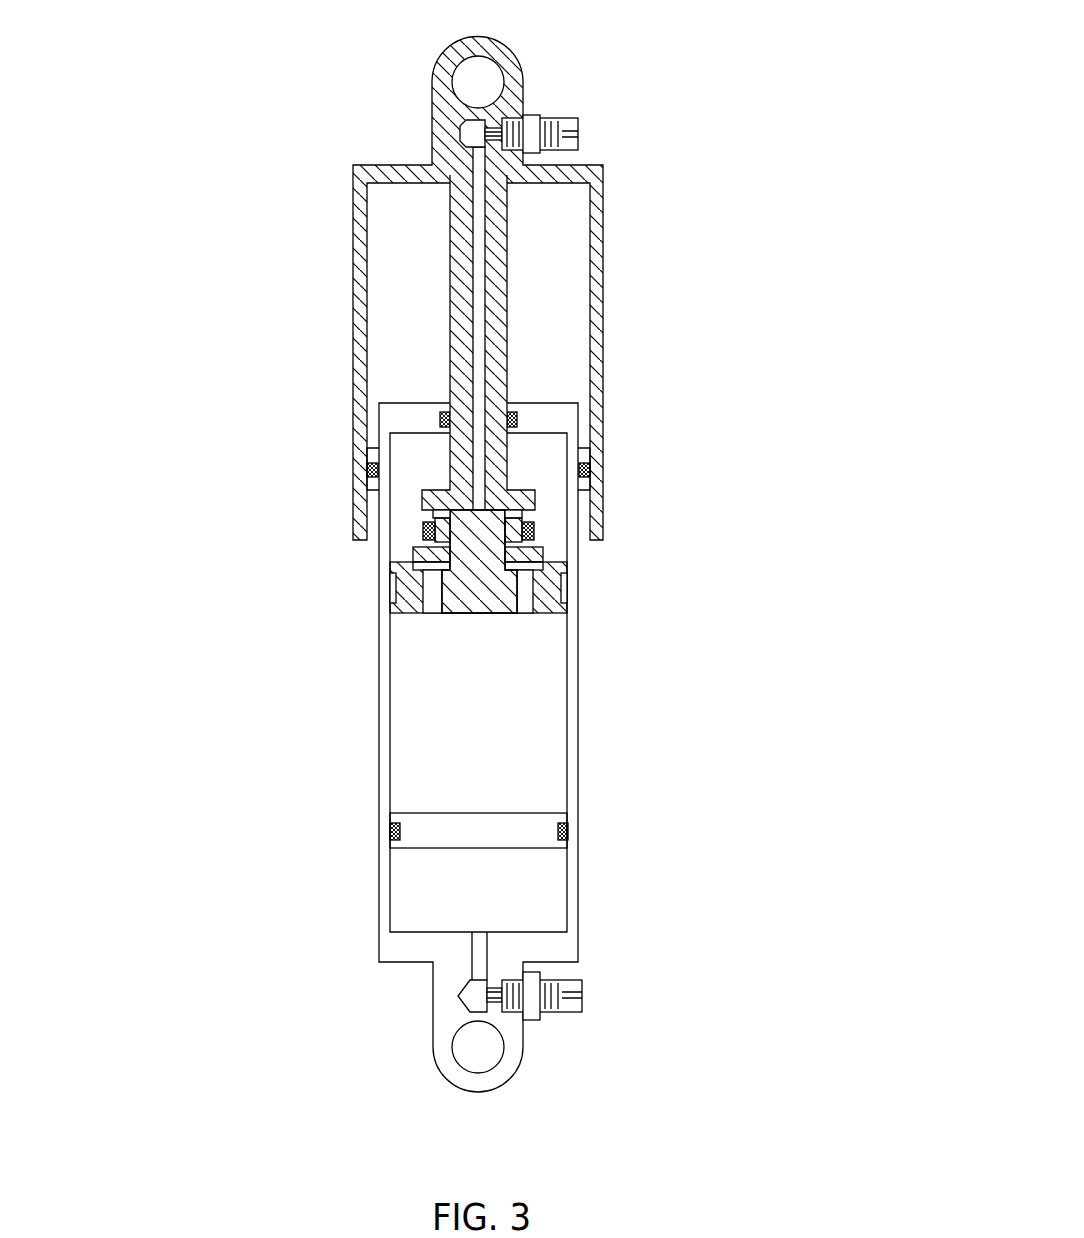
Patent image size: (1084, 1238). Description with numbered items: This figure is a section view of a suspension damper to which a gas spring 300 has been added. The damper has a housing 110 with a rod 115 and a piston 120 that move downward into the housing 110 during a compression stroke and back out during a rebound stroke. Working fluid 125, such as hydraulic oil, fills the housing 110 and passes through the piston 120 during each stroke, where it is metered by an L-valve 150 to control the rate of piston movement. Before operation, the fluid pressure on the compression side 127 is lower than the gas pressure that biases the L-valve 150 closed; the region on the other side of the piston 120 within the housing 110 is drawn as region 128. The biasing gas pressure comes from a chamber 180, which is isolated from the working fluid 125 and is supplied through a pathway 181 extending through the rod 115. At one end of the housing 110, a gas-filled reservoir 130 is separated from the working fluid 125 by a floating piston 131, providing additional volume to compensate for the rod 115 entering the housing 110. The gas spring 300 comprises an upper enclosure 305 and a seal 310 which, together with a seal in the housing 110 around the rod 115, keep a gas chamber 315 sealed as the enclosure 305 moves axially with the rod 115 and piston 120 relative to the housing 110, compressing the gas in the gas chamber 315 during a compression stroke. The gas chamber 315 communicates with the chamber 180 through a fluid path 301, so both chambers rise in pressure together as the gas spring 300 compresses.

The gas spring 300 is at (303, 290).
The fluid path 301 is at (491, 190).
The upper enclosure 305 is at (352, 348).
The seal 310 is at (368, 470).
The gas chamber 315 is at (560, 213).
The housing 110 is at (378, 545).
The rod 115 is at (450, 218).
The piston 120 is at (543, 597).
The working fluid 125 is at (462, 704).
The compression side 127 is at (545, 718).
The rebound chamber 128 is at (543, 465).
The reservoir 130 is at (507, 913).
The floating piston 131 is at (500, 828).
The L-valve 150 is at (548, 534).
The chamber 180 is at (533, 505).
The pathway 181 is at (480, 277).